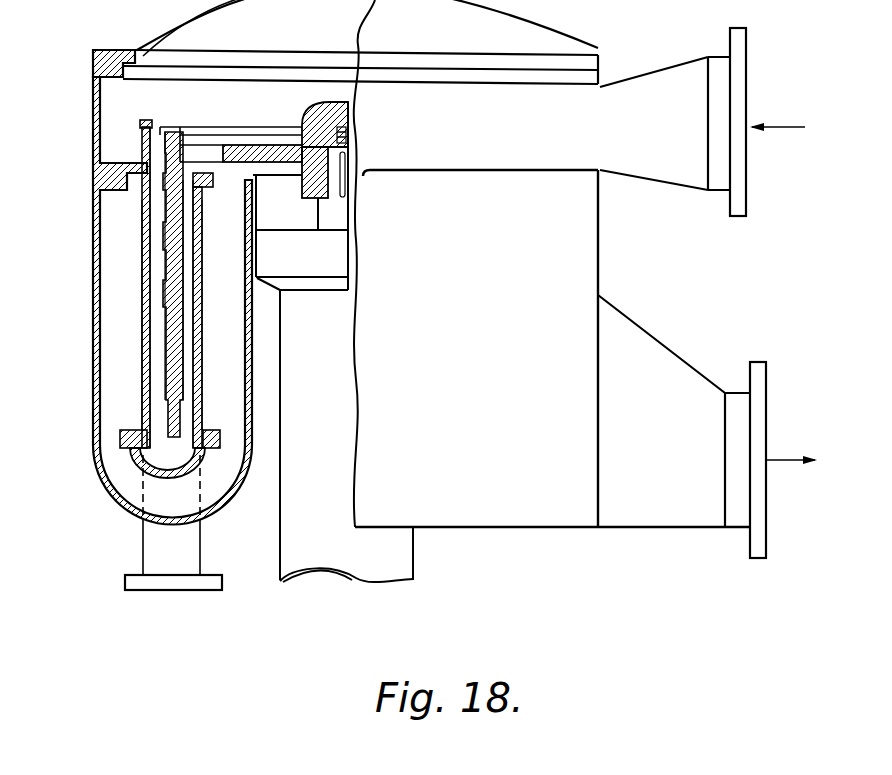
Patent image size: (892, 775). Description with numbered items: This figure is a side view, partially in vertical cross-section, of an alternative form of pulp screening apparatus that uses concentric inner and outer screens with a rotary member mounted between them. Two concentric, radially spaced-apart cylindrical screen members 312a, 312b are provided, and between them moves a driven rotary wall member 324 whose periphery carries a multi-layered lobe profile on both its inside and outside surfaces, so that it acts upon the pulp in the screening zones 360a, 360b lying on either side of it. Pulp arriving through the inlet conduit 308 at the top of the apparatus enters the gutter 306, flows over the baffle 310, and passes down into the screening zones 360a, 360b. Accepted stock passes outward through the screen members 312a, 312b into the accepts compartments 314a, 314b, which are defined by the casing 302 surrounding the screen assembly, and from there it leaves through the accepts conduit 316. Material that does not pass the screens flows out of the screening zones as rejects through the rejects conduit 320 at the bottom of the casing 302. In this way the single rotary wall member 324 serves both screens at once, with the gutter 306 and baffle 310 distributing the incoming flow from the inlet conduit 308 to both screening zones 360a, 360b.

The casing 302 is at (150, 512).
The gutter 306 is at (110, 117).
The inlet conduit 308 is at (687, 43).
The baffle 310 is at (142, 121).
The cylindrical screen member 312a is at (143, 320).
The cylindrical screen member 312b is at (203, 370).
The accepts compartment 314a is at (110, 405).
The accepts compartment 314b is at (228, 423).
The accepts conduit 316 is at (692, 372).
The rejects conduit 320 is at (175, 585).
The rotary wall member 324 is at (168, 365).
The screening zone 360a is at (158, 238).
The screening zone 360b is at (187, 248).